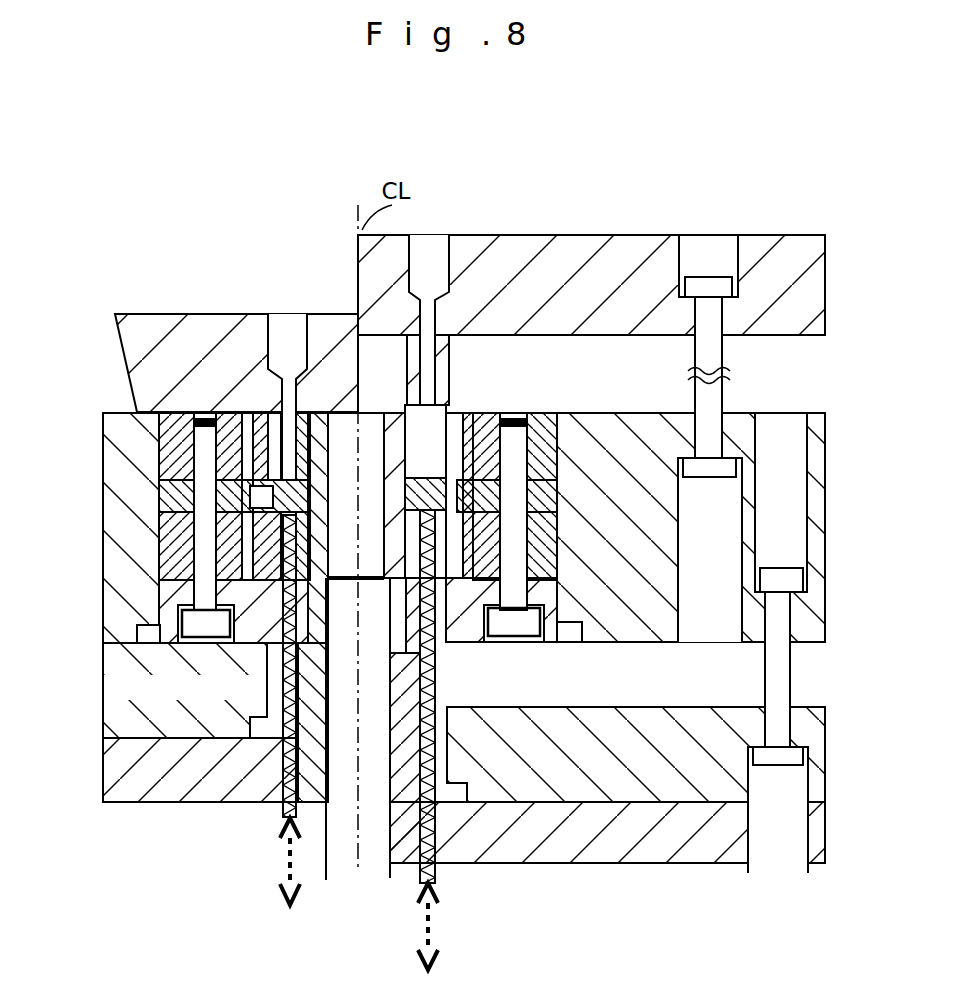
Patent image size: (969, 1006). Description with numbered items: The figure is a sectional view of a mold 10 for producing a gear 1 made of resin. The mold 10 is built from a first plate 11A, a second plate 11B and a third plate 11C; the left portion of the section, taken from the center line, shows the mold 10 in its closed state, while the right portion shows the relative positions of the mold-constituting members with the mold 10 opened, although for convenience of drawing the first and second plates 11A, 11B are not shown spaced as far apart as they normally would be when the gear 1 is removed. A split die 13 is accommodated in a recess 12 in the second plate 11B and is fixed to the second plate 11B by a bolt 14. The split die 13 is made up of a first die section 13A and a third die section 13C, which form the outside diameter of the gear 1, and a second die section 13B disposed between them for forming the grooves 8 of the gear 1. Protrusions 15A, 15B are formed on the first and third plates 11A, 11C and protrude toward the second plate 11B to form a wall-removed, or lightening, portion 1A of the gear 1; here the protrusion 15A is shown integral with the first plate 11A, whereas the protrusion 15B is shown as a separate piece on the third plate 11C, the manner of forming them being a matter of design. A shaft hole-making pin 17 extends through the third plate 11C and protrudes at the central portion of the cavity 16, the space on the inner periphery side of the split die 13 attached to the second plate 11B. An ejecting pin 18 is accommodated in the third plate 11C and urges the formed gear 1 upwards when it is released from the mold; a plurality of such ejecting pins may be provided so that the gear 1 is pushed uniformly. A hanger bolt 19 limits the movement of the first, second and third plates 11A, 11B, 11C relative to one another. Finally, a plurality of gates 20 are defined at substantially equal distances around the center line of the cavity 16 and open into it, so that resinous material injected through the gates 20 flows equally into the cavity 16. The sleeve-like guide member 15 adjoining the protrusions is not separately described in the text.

The gear 1 is at (332, 410).
The wall-removed portion 1A is at (432, 437).
The grooves 8 is at (483, 413).
The mold 10 is at (164, 298).
The first plate 11A is at (117, 314).
The second plate 11B is at (118, 470).
The third plate 11C is at (128, 800).
The recess 12 is at (583, 644).
The split die 13 is at (439, 496).
The first die section 13A is at (562, 450).
The second die section 13B is at (562, 500).
The third die section 13C is at (396, 546).
The bolt 14 is at (150, 616).
The ejector column 15 is at (378, 800).
The protrusion 15A is at (346, 412).
The protrusion 15B is at (467, 620).
The cavity 16 is at (185, 640).
The shaft hole-making pin 17 is at (352, 588).
The ejecting pin 18 is at (275, 497).
The hanger bolt 19 is at (712, 398).
The gates 20 is at (289, 410).